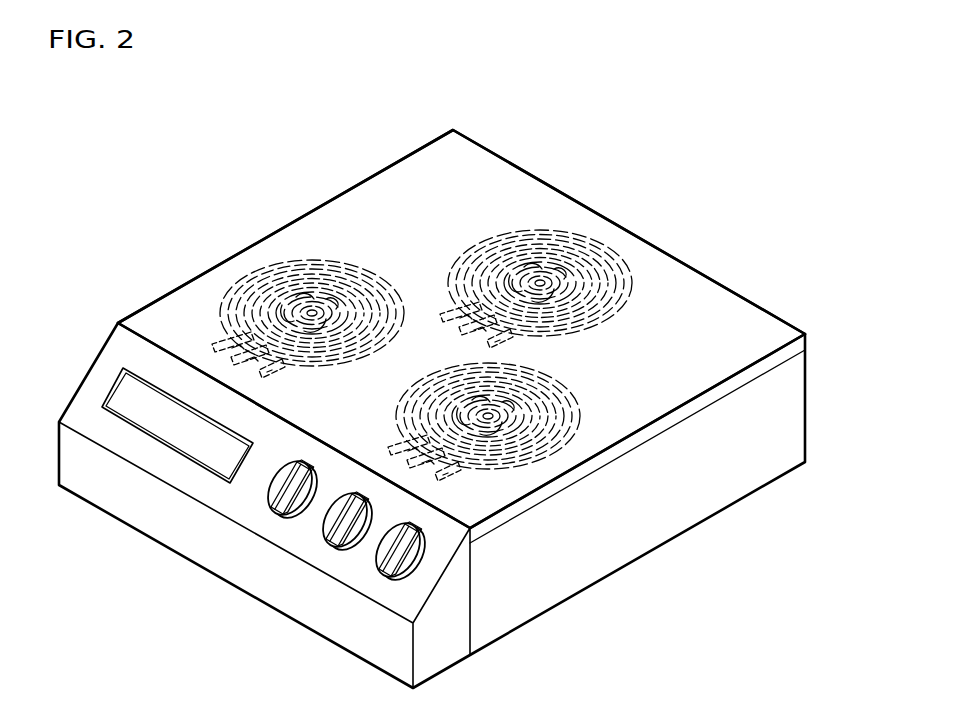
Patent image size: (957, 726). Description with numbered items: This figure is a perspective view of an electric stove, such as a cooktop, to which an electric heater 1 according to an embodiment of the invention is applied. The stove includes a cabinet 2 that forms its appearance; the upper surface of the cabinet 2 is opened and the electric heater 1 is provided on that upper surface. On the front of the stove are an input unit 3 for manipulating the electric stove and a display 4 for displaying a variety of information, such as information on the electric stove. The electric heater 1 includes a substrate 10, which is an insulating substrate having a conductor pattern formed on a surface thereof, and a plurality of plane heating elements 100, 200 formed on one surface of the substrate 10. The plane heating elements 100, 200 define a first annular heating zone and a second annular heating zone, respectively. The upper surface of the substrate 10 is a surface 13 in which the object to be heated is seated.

The electric heater 1 is at (468, 387).
The cabinet 2 is at (792, 417).
The input unit 3 is at (383, 574).
The display 4 is at (187, 433).
The substrate 10 is at (583, 200).
The surface in which the object to be heated is seated 13 is at (528, 198).
The plane heating element 100 is at (630, 231).
The plane heating element 200 is at (588, 260).